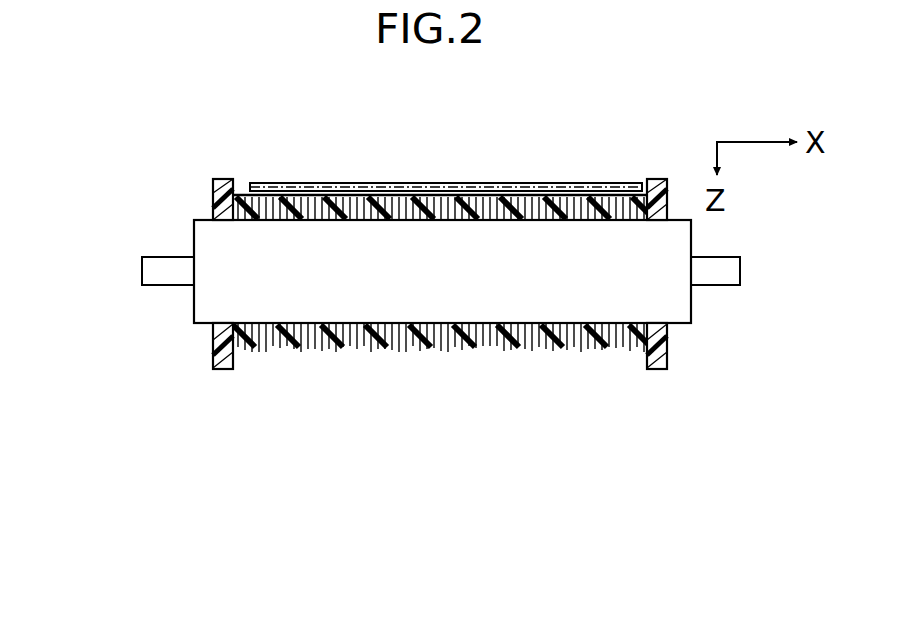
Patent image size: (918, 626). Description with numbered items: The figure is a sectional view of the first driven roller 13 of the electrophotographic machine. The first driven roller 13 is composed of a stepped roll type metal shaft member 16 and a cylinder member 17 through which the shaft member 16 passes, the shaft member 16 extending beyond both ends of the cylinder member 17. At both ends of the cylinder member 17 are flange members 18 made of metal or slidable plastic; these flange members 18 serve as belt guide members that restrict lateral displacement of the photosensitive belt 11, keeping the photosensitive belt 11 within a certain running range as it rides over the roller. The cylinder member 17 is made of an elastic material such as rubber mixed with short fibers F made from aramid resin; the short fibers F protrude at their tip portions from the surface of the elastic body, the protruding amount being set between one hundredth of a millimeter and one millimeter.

The photosensitive belt 11 is at (573, 187).
The first driven roller 13 is at (213, 130).
The shaft member 16 is at (194, 312).
The cylinder member 17 is at (427, 350).
The flange members 18 is at (225, 370).
The short fibers F is at (470, 198).